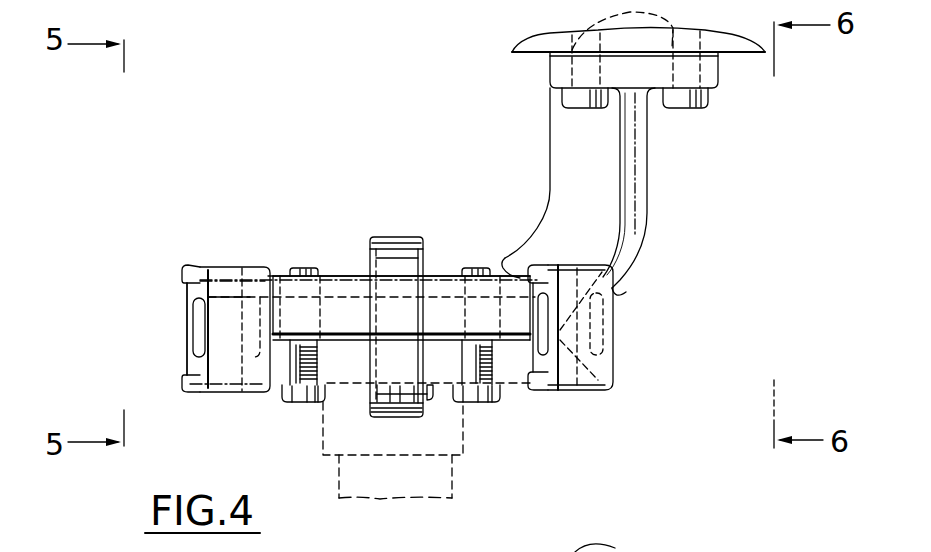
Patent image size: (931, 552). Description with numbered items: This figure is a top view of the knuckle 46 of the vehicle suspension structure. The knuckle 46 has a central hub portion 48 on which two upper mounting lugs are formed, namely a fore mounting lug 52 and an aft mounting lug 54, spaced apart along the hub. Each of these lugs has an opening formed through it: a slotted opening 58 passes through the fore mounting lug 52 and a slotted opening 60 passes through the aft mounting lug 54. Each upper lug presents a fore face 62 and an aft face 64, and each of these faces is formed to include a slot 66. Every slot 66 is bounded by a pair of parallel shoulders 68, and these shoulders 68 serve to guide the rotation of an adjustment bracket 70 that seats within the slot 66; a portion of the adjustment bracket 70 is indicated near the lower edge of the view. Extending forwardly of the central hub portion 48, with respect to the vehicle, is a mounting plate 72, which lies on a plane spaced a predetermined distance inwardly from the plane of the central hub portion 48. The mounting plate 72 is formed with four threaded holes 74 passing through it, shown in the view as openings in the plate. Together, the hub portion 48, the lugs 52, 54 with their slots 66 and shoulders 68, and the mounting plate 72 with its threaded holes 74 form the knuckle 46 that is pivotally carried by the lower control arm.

The knuckle 46 is at (350, 124).
The central hub portion 48 is at (336, 344).
The upper fore mounting lug 52 is at (576, 390).
The upper aft mounting lug 54 is at (218, 393).
The slotted opening 58 is at (570, 268).
The slotted opening 60 is at (196, 325).
The fore face 62 is at (273, 281).
The aft face 64 is at (188, 355).
The slot 66 is at (506, 262).
The parallel shoulders 68 is at (190, 270).
The adjustment bracket 70 is at (634, 546).
The mounting plate 72 is at (550, 68).
The threaded holes 74 is at (638, 26).